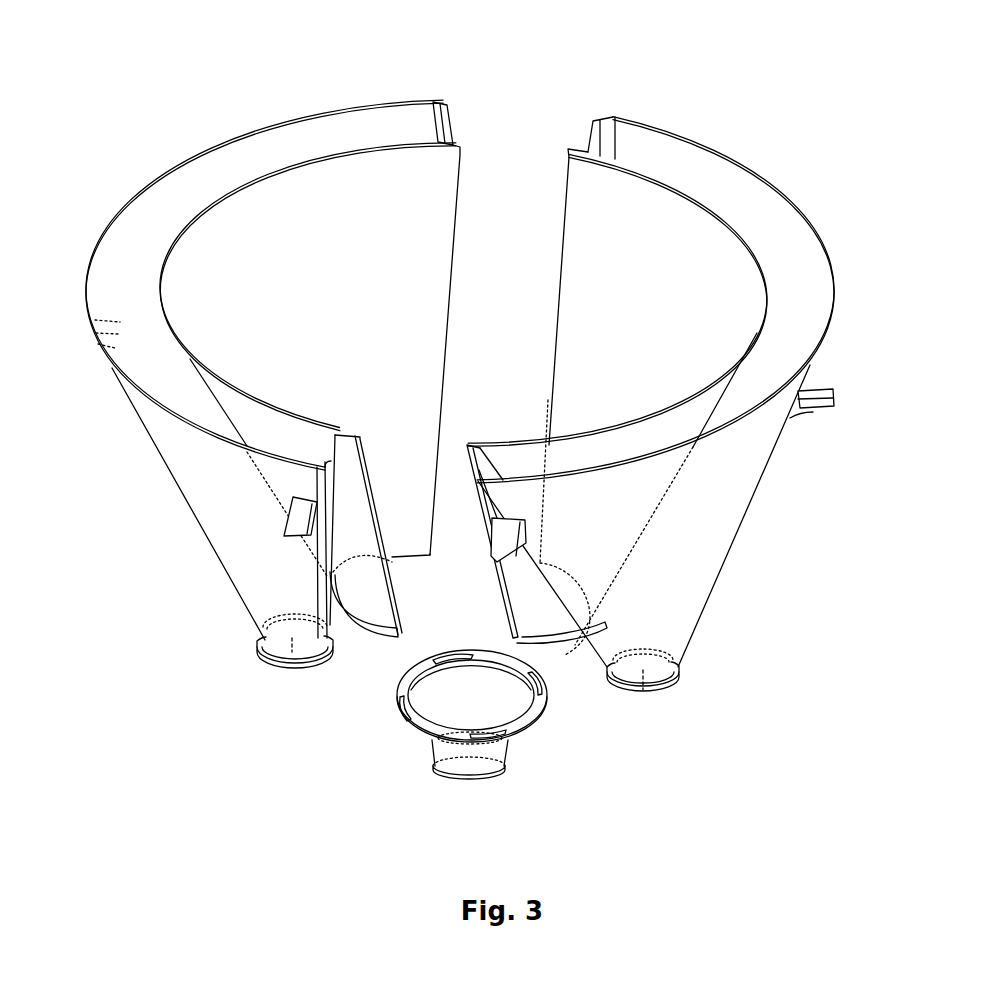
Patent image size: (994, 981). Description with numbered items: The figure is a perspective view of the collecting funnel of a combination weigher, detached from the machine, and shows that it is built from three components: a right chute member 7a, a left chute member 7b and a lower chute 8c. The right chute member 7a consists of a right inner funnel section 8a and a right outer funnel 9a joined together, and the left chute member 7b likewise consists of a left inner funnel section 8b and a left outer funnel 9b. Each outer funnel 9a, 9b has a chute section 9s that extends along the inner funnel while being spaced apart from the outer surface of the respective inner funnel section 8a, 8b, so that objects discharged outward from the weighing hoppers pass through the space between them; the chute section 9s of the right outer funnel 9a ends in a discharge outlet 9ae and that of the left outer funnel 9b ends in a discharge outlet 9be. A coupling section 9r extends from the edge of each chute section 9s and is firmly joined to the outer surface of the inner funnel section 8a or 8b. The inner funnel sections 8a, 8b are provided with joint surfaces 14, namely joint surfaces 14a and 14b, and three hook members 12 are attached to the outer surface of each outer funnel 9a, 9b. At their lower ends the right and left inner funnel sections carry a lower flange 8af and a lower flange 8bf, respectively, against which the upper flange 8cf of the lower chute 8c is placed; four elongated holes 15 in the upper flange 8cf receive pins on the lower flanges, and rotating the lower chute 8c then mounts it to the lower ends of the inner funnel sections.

The right chute member 7a is at (885, 125).
The left chute member 7b is at (70, 95).
The right inner funnel section 8a is at (706, 202).
The left inner funnel section 8b is at (253, 180).
The right outer funnel 9a is at (803, 210).
The left outer funnel 9b is at (157, 180).
The chute section 9s is at (346, 106).
The coupling section 9r is at (438, 141).
The discharge outlet 9ae is at (642, 692).
The discharge outlet 9be is at (292, 665).
The lower flange 8af is at (560, 645).
The lower flange 8bf is at (360, 634).
The lower chute 8c is at (508, 745).
The upper flange 8cf is at (417, 735).
The hook member 12 is at (287, 527).
The joint surfaces 14 is at (562, 60).
The joint surface 14a is at (569, 152).
The joint surface 14b is at (458, 148).
The elongated hole 15 is at (400, 710).